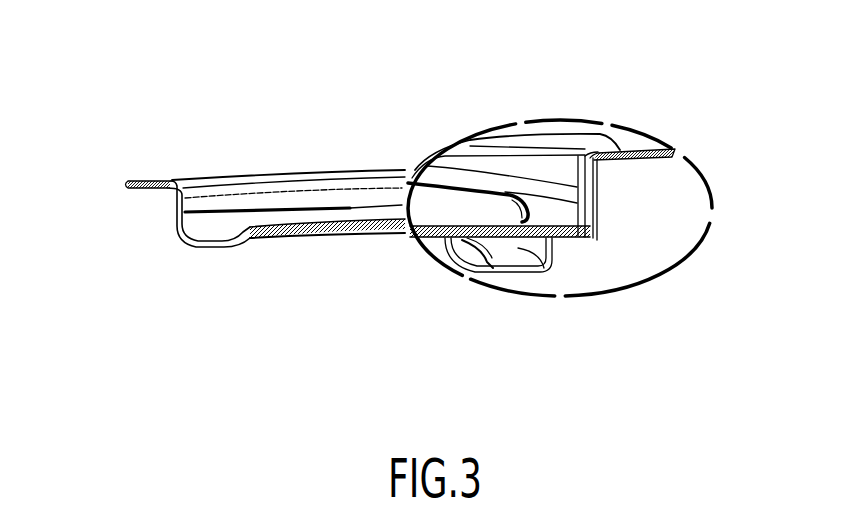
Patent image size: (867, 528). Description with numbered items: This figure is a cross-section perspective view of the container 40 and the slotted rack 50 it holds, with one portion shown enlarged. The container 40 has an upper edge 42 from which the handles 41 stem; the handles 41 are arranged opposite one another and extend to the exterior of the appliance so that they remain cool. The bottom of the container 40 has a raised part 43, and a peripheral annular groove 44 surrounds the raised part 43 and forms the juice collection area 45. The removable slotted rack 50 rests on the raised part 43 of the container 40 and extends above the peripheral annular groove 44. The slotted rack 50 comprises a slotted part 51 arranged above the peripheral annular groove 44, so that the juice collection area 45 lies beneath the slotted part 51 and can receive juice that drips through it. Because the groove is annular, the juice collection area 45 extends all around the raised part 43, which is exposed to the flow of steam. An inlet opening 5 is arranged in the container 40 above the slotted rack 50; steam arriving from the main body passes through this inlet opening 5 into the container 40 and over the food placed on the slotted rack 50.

The container 40 is at (192, 164).
The handle 41 is at (145, 181).
The upper edge 42 is at (362, 169).
The raised part 43 is at (362, 236).
The peripheral annular groove 44 is at (500, 272).
The juice collection area 45 is at (518, 250).
The inlet opening 5 is at (470, 168).
The slotted rack 50 is at (312, 199).
The slotted part 51 is at (521, 200).